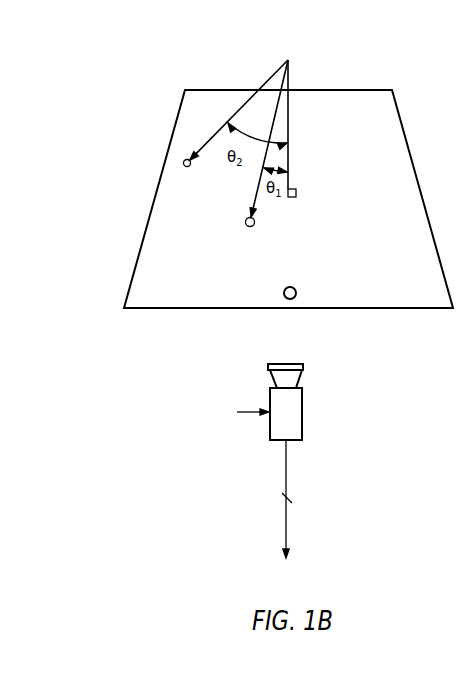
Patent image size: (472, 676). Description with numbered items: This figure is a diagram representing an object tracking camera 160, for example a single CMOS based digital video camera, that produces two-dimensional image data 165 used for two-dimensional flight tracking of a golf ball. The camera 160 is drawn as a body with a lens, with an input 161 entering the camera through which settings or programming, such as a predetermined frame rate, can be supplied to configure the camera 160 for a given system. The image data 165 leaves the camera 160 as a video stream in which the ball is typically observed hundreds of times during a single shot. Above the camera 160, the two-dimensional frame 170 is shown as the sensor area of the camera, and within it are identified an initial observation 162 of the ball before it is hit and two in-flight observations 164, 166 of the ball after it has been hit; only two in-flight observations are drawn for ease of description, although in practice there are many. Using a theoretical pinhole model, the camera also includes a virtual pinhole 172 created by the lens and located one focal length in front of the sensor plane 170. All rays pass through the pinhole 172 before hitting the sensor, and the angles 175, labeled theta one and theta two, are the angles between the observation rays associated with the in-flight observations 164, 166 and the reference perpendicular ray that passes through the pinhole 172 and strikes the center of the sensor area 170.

The 2D frame 170 is at (116, 103).
The virtual pinhole 172 is at (289, 60).
The angles 175 is at (282, 215).
The initial observation 162 is at (296, 296).
The in-flight observation 164 is at (247, 226).
The in-flight observation 166 is at (184, 166).
The object tracking camera 160 is at (285, 430).
The input 161 is at (237, 412).
The 2D image data 165 is at (287, 537).